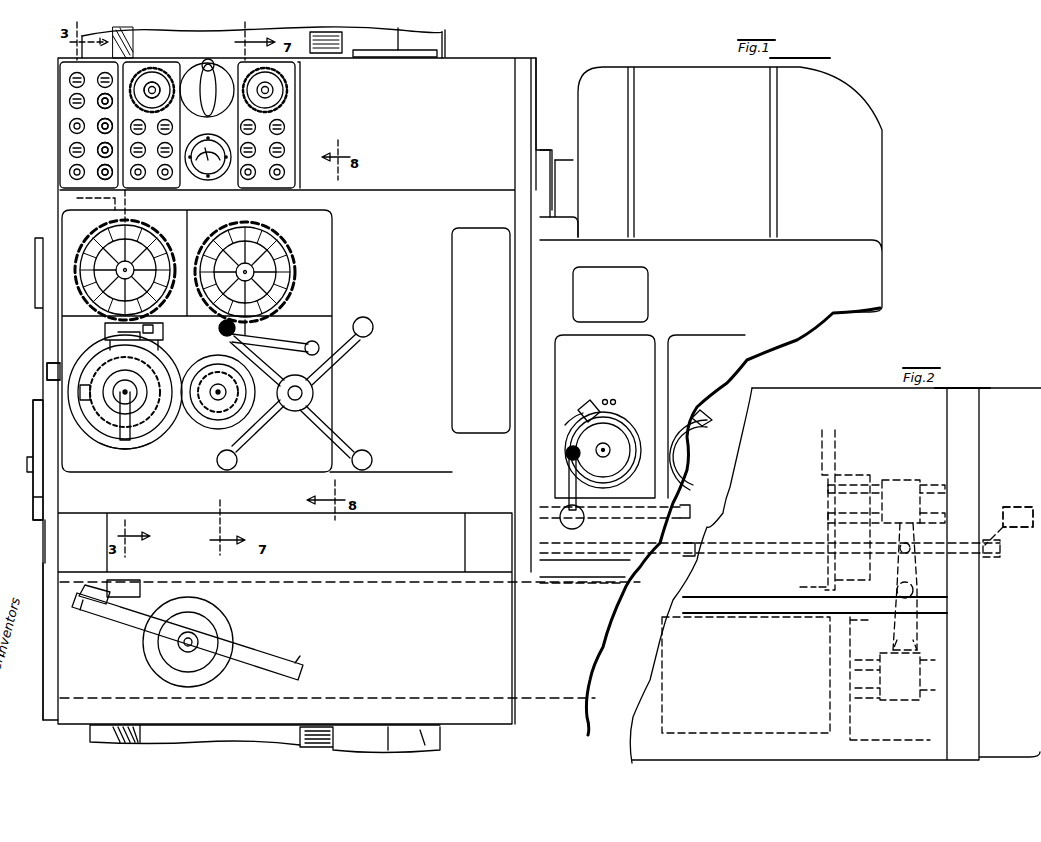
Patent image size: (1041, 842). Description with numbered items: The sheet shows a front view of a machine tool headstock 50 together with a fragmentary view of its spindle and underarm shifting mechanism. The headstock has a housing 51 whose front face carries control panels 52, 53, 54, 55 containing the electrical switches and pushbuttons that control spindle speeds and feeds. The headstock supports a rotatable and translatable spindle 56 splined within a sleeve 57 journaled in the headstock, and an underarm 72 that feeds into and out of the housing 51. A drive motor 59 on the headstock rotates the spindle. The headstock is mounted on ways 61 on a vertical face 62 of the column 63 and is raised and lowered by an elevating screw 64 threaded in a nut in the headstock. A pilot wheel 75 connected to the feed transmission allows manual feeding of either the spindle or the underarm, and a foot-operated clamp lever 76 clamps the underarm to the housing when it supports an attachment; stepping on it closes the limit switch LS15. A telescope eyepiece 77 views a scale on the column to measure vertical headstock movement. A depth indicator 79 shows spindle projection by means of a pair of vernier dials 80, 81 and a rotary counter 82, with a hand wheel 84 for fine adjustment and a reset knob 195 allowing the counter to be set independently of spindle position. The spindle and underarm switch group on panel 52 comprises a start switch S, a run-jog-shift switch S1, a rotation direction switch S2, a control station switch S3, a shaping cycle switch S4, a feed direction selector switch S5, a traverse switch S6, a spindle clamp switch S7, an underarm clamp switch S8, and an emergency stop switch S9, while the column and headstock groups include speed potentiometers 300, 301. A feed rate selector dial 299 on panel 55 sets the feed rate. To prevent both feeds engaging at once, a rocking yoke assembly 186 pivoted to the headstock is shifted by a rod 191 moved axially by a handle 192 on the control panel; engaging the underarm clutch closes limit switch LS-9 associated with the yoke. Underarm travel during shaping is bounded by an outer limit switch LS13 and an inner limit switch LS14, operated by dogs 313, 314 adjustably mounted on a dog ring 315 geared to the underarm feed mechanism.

In FIG. 1, the headstock 50 is at (545, 68).
In FIG. 1, the housing 51 is at (430, 498).
In FIG. 1, the control panel 52 is at (68, 62).
In FIG. 1, the control panel 53 is at (208, 63).
In FIG. 1, the control panel 54 is at (300, 69).
In FIG. 1, the control panel 55 is at (322, 250).
In FIG. 1, the spindle 56 is at (33, 440).
In FIG. 1, the sleeve 57 is at (47, 372).
In FIG. 1, the drive motor 59 is at (716, 158).
In FIG. 1, the ways 61 is at (445, 40).
In FIG. 1, the vertical face 62 is at (378, 42).
In FIG. 1, the column 63 is at (88, 733).
In FIG. 1, the elevating screw 64 is at (300, 740).
In FIG. 1, the underarm 72 is at (40, 580).
In FIG. 1, the pilot wheel 75 is at (345, 445).
In FIG. 1, the clamp lever 76 is at (300, 668).
In FIG. 1, the telescope eyepiece 77 is at (215, 62).
In FIG. 1, the depth indicator 79 is at (100, 327).
In FIG. 1, the dial 80 is at (138, 420).
In FIG. 1, the dial 81 is at (210, 430).
In FIG. 1, the rotary counter 82 is at (150, 332).
In FIG. 1, the hand wheel 84 is at (138, 445).
In FIG. 2, the rocking yoke assembly 186 is at (900, 630).
In FIG. 1, the rod 191 is at (690, 508).
In FIG. 1, the handle 192 is at (565, 482).
In FIG. 1, the reset knob 195 is at (235, 324).
In FIG. 1, the feed rate selector dial 299 is at (300, 272).
In FIG. 1, the speed potentiometer 300 is at (162, 75).
In FIG. 1, the speed potentiometer 301 is at (268, 80).
In FIG. 1, the dog 313 is at (590, 405).
In FIG. 1, the dog 314 is at (575, 410).
In FIG. 1, the dog ring 315 is at (568, 445).
In FIG. 1, the start switch S is at (70, 172).
In FIG. 1, the run-jog-shift switch S1 is at (98, 101).
In FIG. 1, the spindle rotation direction control switch S2 is at (70, 101).
In FIG. 1, the control station switch S3 is at (70, 150).
In FIG. 1, the shaping cycle switch S4 is at (70, 128).
In FIG. 1, the spindle feed direction selector switch S5 is at (70, 80).
In FIG. 1, the traverse switch S6 is at (98, 152).
In FIG. 1, the spindle clamp switch S7 is at (108, 78).
In FIG. 1, the underarm clamp switch S8 is at (98, 128).
In FIG. 1, the emergency stop pushbutton switch S9 is at (110, 174).
In FIG. 1, the outer limit switch LS13 is at (614, 402).
In FIG. 1, the inner limit switch LS14 is at (607, 400).
In FIG. 1, the limit switch LS15 is at (140, 590).
In FIG. 2, the limit switch LS-9 is at (1010, 506).